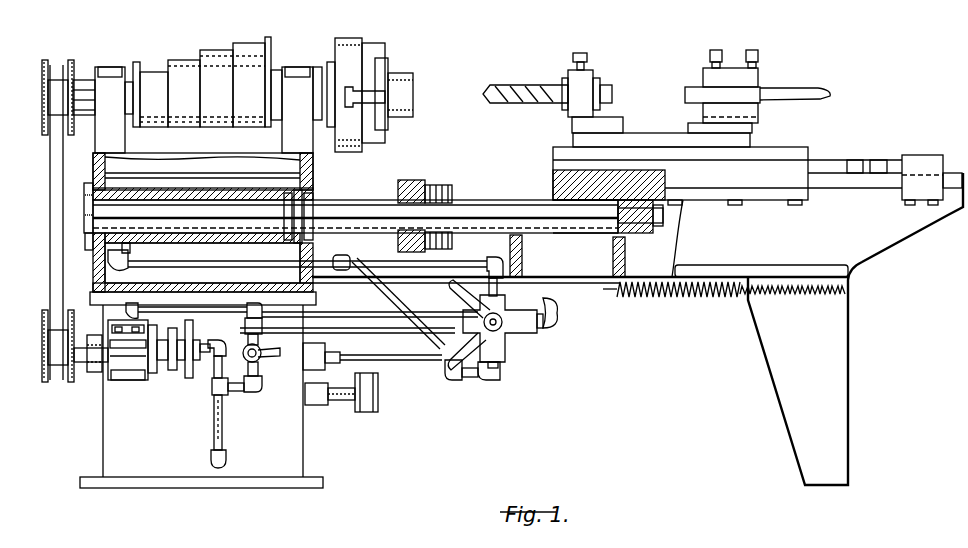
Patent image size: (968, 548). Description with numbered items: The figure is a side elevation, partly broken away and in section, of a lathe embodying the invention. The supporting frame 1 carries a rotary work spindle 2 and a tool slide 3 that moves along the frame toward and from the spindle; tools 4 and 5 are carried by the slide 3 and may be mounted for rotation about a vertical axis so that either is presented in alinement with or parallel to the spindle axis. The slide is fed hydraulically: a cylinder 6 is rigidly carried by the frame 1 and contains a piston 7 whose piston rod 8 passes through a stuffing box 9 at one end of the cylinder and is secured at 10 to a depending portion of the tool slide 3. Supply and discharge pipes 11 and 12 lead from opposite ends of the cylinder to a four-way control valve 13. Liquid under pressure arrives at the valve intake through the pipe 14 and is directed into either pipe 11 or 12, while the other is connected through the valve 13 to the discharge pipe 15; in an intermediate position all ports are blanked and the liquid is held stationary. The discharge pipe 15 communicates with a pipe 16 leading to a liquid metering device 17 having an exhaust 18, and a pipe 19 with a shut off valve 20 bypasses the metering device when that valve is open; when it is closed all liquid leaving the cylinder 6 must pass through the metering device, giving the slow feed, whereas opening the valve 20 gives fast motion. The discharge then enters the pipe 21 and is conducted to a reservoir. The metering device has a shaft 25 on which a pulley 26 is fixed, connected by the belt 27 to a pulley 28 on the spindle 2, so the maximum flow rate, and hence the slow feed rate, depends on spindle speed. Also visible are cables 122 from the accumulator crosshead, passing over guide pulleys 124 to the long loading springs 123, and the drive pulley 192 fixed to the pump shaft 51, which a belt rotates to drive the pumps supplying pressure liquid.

The supporting frame 1 is at (495, 183).
The rotary work spindle 2 is at (323, 67).
The tool slide 3 is at (812, 147).
The tool 4 is at (527, 86).
The tool 5 is at (796, 92).
The cylinder 6 is at (383, 184).
The piston 7 is at (295, 188).
The piston rod 8 is at (578, 222).
The stuffing box 9 is at (438, 180).
The securing point 10 is at (640, 236).
The supply and discharge pipe 11 is at (250, 258).
The supply and discharge pipe 12 is at (456, 265).
The four-way control valve 13 is at (505, 335).
The pipe 14 is at (560, 300).
The discharge pipe 15 is at (355, 333).
The pipe 16 is at (216, 308).
The liquid metering device 17 is at (131, 372).
The exhaust 18 is at (214, 368).
The pipe 19 is at (263, 352).
The shut off valve 20 is at (262, 370).
The pipe 21 is at (212, 444).
The shaft 25 is at (88, 368).
The pulley 26 is at (45, 385).
The belt 27 is at (49, 160).
The pulley 28 is at (73, 62).
The pump shaft 51 is at (338, 406).
The cable 122 is at (406, 362).
The loading spring 123 is at (698, 300).
The guide pulley 124 is at (458, 284).
The drive pulley 192 is at (370, 414).